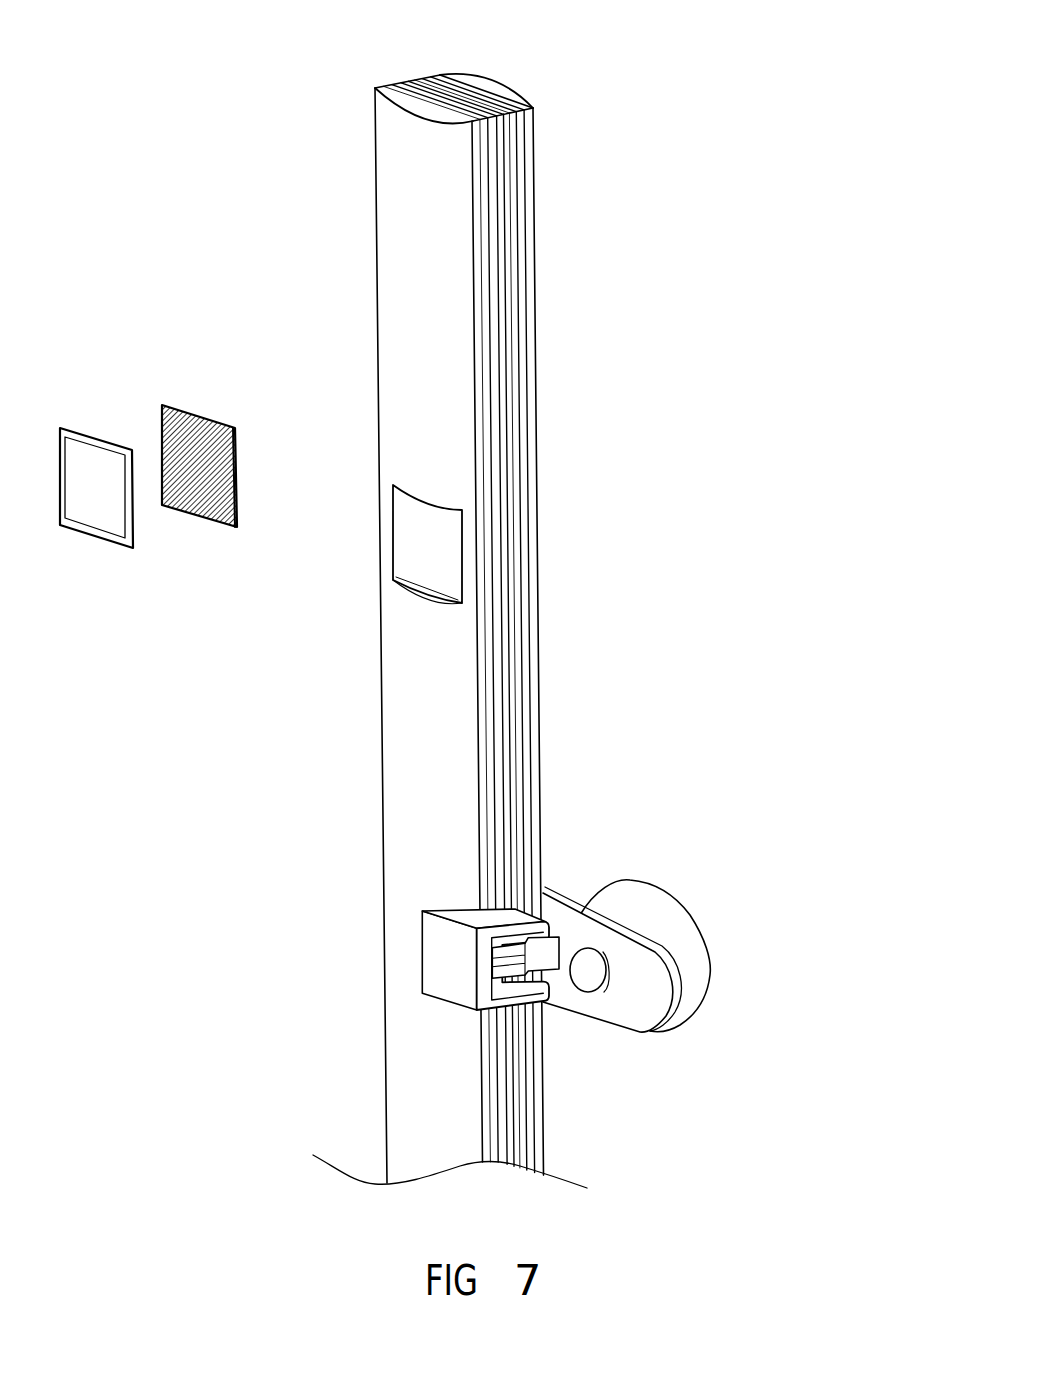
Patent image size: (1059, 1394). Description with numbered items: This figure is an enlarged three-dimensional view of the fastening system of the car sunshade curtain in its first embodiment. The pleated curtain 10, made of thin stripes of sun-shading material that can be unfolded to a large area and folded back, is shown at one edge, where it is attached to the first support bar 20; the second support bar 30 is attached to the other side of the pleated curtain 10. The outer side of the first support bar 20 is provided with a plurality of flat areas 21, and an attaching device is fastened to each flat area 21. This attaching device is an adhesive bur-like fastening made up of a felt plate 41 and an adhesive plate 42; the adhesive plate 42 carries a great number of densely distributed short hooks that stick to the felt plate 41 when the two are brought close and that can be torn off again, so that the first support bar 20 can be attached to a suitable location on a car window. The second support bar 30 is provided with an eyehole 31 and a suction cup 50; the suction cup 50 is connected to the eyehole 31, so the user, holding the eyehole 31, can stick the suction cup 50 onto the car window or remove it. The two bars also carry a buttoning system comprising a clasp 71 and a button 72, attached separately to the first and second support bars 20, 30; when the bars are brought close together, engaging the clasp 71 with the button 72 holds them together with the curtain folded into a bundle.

The pleated curtain 10 is at (497, 600).
The first support bar 20 is at (340, 635).
The flat area 21 is at (413, 543).
The second support bar 30 is at (540, 148).
The eyehole 31 is at (613, 990).
The felt plate 41 is at (90, 515).
The adhesive plate 42 is at (188, 415).
The suction cup 50 is at (705, 991).
The clasp 71 is at (429, 847).
The button 72 is at (548, 922).